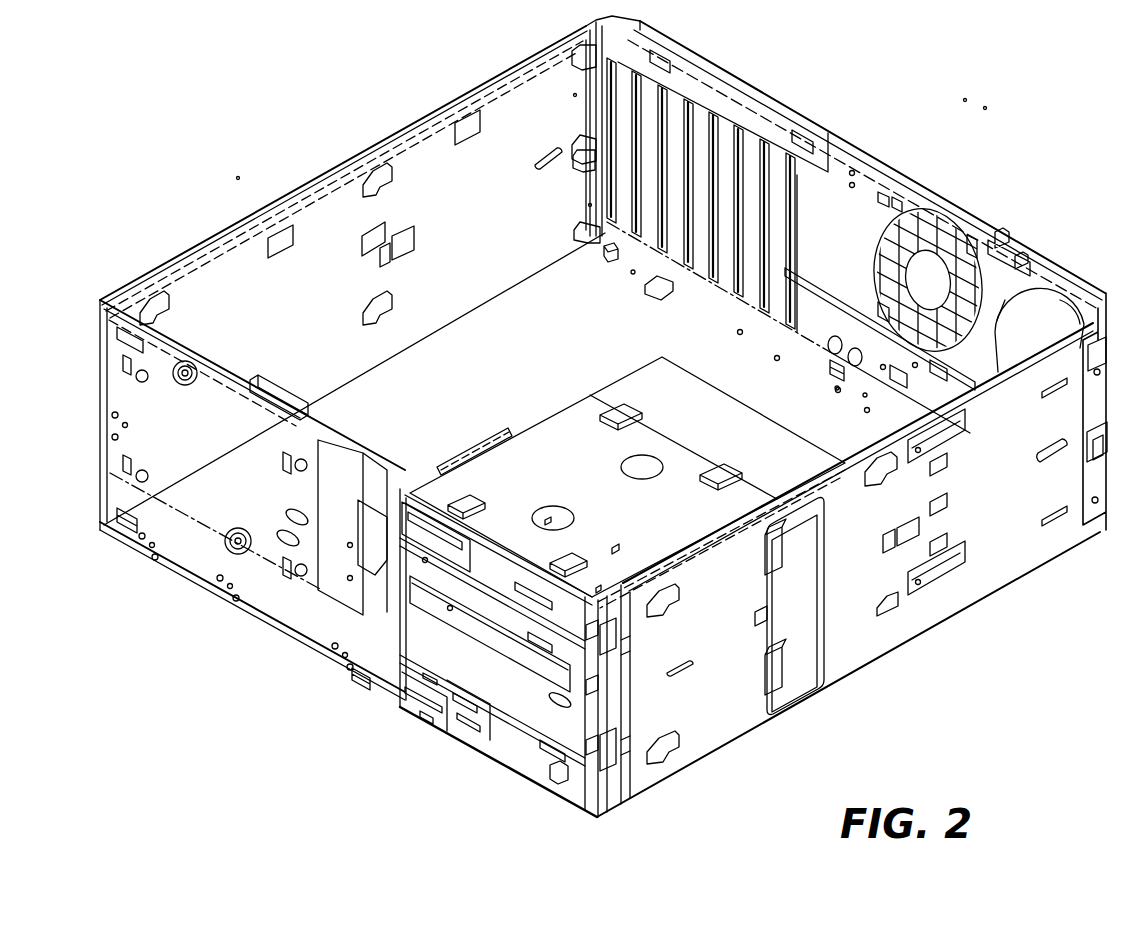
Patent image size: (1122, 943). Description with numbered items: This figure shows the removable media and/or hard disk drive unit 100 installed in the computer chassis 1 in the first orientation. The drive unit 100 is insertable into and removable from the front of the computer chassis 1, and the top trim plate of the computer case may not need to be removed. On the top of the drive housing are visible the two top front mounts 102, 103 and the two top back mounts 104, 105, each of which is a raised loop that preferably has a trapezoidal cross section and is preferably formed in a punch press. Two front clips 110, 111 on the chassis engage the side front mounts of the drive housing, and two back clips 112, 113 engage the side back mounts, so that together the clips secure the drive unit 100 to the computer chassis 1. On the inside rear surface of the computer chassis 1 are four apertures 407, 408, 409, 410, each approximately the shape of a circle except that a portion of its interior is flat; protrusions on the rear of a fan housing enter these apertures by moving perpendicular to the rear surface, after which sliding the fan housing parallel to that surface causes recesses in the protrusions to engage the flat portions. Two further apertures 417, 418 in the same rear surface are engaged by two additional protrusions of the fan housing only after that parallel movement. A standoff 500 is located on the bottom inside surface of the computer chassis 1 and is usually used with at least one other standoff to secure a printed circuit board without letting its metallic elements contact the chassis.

The computer chassis 1 is at (374, 150).
The drive unit 100 is at (536, 392).
The top front mount 102 is at (475, 501).
The top front mount 103 is at (570, 568).
The top back mount 104 is at (642, 406).
The top back mount 105 is at (738, 467).
The front clip 110 is at (626, 636).
The front clip 111 is at (634, 742).
The back clip 112 is at (765, 559).
The back clip 113 is at (760, 683).
The aperture 407 is at (902, 202).
The aperture 408 is at (962, 215).
The aperture 409 is at (880, 307).
The aperture 410 is at (980, 348).
The aperture 417 is at (886, 193).
The aperture 418 is at (987, 238).
The standoff 500 is at (597, 263).